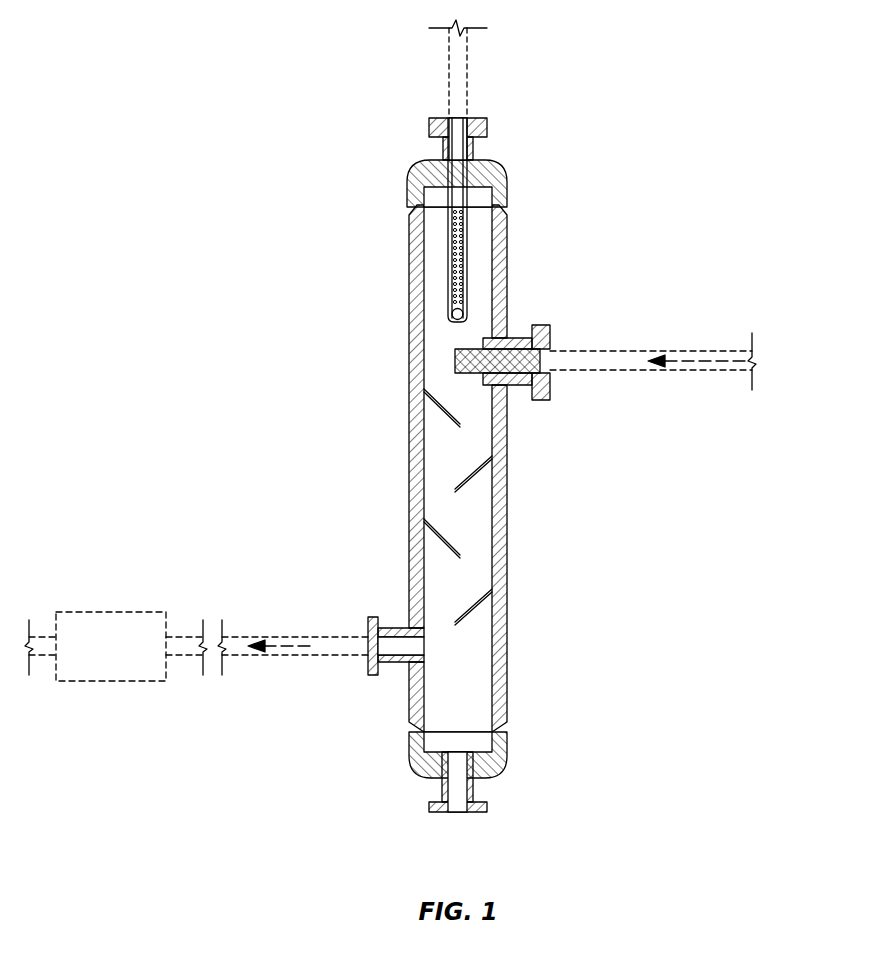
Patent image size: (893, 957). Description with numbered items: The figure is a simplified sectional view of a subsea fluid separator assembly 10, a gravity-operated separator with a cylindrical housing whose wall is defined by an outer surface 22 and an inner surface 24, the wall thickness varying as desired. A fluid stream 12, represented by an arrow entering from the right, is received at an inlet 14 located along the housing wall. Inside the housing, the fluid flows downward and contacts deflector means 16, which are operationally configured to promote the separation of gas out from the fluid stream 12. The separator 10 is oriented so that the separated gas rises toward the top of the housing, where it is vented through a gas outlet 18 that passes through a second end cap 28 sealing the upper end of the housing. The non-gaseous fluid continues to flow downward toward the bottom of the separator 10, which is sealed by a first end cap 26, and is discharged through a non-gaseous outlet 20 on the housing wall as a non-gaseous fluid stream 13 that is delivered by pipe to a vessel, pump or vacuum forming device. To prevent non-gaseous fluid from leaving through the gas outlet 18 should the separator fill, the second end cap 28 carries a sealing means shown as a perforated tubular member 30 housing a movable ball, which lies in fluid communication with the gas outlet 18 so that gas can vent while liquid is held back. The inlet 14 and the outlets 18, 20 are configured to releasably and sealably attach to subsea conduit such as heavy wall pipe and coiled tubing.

The subsea fluid separator assembly 10 is at (278, 38).
The fluid stream 12 is at (700, 361).
The non-gaseous fluid stream 13 is at (280, 645).
The inlet 14 is at (553, 362).
The deflector means 16 is at (440, 408).
The gas outlet 18 is at (462, 118).
The non-gaseous outlet 20 is at (368, 646).
The outer surface 22 is at (507, 507).
The inner surface 24 is at (485, 653).
The first end cap 26 is at (409, 745).
The second end cap 28 is at (410, 184).
The perforated tubular member 30 is at (446, 265).